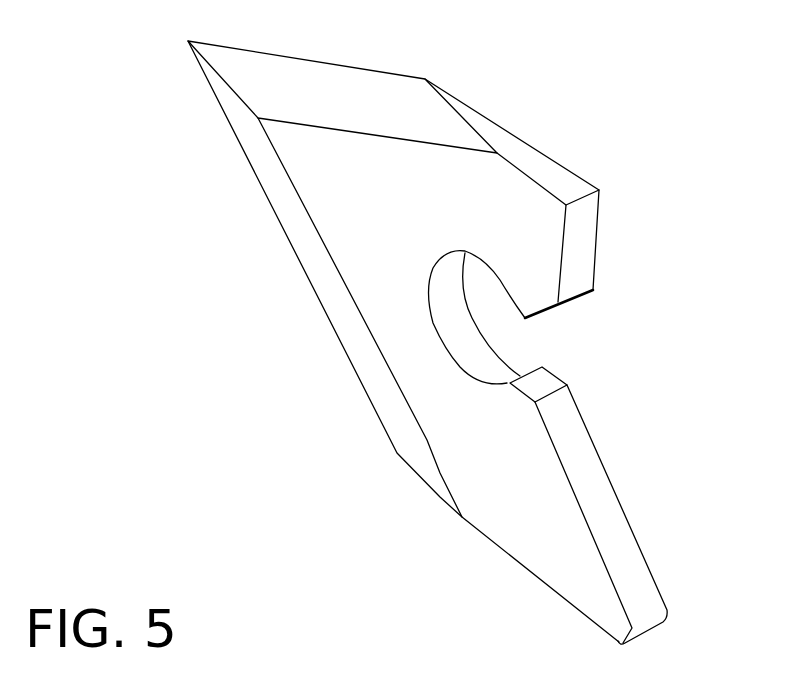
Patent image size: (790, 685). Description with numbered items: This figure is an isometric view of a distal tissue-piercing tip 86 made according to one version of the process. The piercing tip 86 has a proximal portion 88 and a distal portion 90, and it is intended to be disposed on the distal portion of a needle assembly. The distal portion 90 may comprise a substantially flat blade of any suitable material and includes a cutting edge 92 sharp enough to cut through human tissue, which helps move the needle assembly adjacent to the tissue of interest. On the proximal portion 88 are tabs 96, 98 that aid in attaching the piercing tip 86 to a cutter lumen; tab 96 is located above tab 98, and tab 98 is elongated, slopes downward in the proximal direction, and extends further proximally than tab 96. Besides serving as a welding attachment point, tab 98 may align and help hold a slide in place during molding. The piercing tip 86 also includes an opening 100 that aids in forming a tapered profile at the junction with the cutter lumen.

The distal tissue-piercing tip 86 is at (181, 338).
The proximal portion 88 is at (570, 330).
The distal portion 90 is at (192, 142).
The cutting edge 92 is at (330, 77).
The tab 96 is at (545, 245).
The tab 98 is at (548, 562).
The opening 100 is at (480, 358).